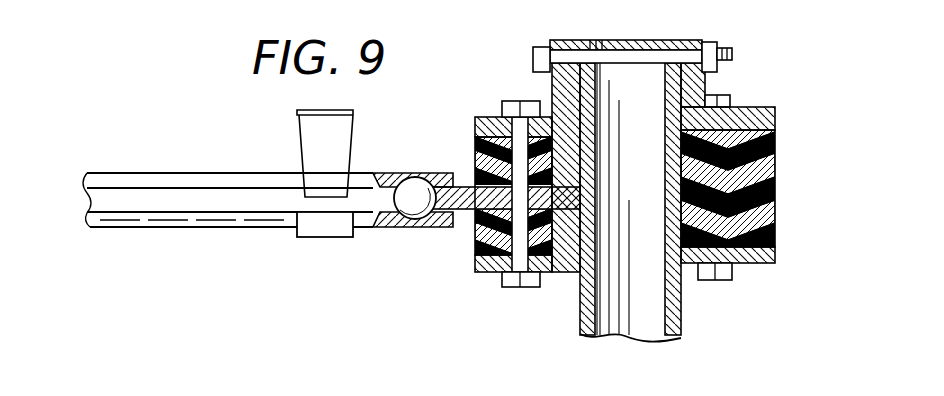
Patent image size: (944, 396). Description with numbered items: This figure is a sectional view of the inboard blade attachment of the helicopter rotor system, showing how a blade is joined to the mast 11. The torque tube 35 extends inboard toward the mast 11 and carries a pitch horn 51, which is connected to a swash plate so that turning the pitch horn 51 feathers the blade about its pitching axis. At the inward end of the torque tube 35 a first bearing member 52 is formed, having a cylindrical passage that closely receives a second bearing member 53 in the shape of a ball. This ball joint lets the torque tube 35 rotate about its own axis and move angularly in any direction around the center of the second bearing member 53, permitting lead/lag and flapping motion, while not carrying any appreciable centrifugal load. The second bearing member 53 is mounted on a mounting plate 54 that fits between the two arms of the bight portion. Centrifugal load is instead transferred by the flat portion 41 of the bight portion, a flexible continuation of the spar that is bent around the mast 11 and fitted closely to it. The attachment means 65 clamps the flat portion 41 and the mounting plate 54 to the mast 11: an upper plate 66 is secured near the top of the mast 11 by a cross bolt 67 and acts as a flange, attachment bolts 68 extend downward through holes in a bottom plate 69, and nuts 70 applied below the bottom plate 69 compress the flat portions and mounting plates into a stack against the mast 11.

The mast 11 is at (582, 314).
The torque tube 35 is at (170, 173).
The flat portion 41 is at (776, 182).
The pitch horn 51 is at (352, 122).
The first bearing member 52 is at (386, 186).
The second bearing member 53 is at (406, 208).
The mounting plate 54 is at (458, 217).
The attachment means 65 is at (765, 92).
The upper plate 66 is at (776, 118).
The cross bolt 67 is at (650, 53).
The attachment bolts 68 is at (512, 100).
The bottom plate 69 is at (750, 264).
The nuts 70 is at (722, 281).